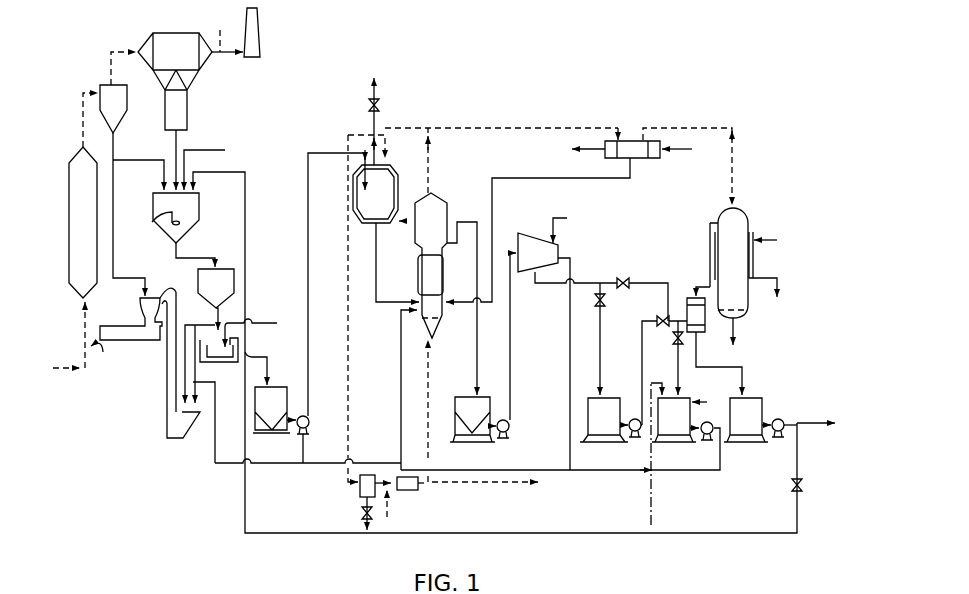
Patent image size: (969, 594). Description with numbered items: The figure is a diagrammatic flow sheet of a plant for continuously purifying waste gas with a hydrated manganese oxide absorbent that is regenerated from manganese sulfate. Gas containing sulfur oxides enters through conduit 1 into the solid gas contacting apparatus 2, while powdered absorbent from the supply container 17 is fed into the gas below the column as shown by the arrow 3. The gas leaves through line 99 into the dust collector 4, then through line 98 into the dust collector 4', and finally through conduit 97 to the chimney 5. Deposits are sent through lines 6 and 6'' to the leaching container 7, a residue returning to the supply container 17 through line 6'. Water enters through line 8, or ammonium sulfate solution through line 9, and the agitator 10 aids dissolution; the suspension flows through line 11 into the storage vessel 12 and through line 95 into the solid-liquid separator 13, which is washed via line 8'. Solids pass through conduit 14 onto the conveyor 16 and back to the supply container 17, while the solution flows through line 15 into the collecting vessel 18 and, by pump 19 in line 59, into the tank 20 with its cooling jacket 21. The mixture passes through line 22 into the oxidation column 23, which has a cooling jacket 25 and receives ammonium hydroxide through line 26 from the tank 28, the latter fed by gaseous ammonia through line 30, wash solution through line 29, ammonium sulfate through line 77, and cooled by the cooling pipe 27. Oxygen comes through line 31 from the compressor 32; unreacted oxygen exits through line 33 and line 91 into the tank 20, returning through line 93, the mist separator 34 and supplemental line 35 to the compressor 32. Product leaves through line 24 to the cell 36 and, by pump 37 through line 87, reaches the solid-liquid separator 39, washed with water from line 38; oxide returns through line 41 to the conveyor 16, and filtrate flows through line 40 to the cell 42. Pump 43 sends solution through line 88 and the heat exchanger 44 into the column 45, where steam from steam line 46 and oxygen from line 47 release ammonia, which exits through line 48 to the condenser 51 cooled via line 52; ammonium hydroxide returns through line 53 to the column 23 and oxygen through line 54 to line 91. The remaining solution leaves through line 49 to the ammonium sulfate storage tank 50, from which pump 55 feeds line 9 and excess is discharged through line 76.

The conduit 1 is at (66, 372).
The solid gas contacting apparatus 2 is at (83, 222).
The arrow 3 is at (104, 358).
The separator or dust collector 4 is at (113, 109).
The separator or dust collector 4' is at (175, 81).
The chimney 5 is at (257, 33).
The line 6 is at (138, 158).
The line 6' is at (129, 214).
The line 6'' is at (197, 150).
The leaching container 7 is at (176, 218).
The line 8 is at (213, 152).
The line 8' is at (263, 328).
The line 9 is at (245, 172).
The agitator 10 is at (152, 222).
The line 11 is at (201, 258).
The storage vessel 12 is at (216, 288).
The solid-liquid separator 13 is at (217, 400).
The conduit 14 is at (195, 351).
The line 15 is at (257, 357).
The conveyor 16 is at (167, 393).
The supply container 17 is at (125, 326).
The collecting vessel 18 is at (274, 410).
The pump 19 is at (308, 440).
The tank 20 is at (373, 150).
The cooling jacket 21 is at (399, 179).
The line 22 is at (376, 280).
The oxidation column 23 is at (431, 265).
The line 24 is at (476, 258).
The cooling jacket 25 is at (418, 285).
The line 26 is at (401, 370).
The cooling pipe 27 is at (717, 367).
The tank 28 is at (682, 420).
The line 29 is at (661, 283).
The line 30 is at (651, 480).
The line 31 is at (430, 436).
The compressor 32 is at (420, 490).
The line 33 is at (430, 158).
The mist separator 34 is at (360, 492).
The line 35 is at (388, 513).
The cell 36 is at (479, 419).
The pump 37 is at (545, 470).
The line 38 is at (575, 221).
The solid-liquid separator 39 is at (538, 252).
The line 40 is at (601, 327).
The line 41 is at (575, 270).
The cell 42 is at (604, 420).
The pump 43 is at (632, 438).
The heat exchanger 44 is at (687, 305).
The column 45 is at (743, 263).
The steam line 46 is at (777, 236).
The line 47 is at (742, 350).
The line 48 is at (735, 160).
The line 49 is at (762, 378).
The ammonium sulfate storage tank 50 is at (747, 420).
The condenser 51 is at (629, 141).
The line 52 is at (673, 152).
The line 53 is at (532, 178).
The line 54 is at (607, 128).
The pump 55 is at (773, 437).
The line 59 is at (308, 298).
The line 76 is at (800, 423).
The line 77 is at (682, 354).
The line 87 is at (510, 372).
The line 88 is at (642, 343).
The line 91 is at (428, 128).
The line 93 is at (348, 395).
The line 95 is at (218, 318).
The conduit 97 is at (213, 28).
The line 98 is at (133, 52).
The line 99 is at (82, 118).